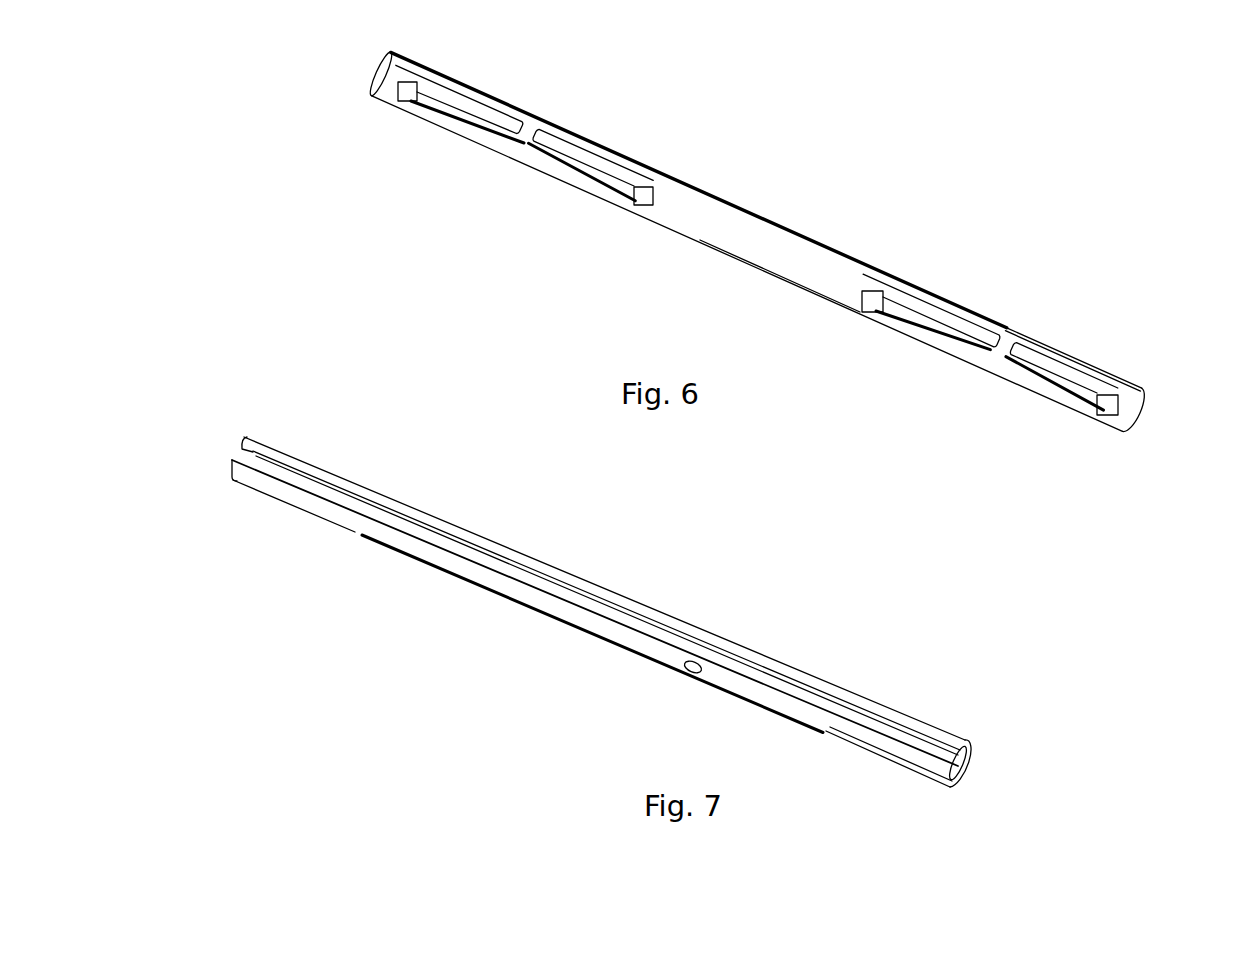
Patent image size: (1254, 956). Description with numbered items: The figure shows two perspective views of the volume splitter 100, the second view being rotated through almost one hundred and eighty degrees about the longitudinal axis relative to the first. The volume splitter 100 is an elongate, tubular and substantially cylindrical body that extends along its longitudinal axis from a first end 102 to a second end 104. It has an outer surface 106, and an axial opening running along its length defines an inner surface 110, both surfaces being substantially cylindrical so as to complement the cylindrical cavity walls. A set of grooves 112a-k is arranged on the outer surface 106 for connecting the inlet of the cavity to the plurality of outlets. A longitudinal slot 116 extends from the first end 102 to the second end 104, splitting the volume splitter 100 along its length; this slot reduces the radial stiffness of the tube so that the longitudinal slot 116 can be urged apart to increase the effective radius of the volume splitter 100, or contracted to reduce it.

In FIG. 6, the volume splitter 100 is at (750, 252).
In FIG. 7, the volume splitter 100 is at (483, 602).
In FIG. 6, the first end 102 is at (372, 93).
In FIG. 7, the first end 102 is at (200, 472).
In FIG. 6, the second end 104 is at (1137, 425).
In FIG. 7, the second end 104 is at (963, 788).
In FIG. 6, the outer surface 106 is at (817, 272).
In FIG. 7, the outer surface 106 is at (700, 628).
In FIG. 7, the inner surface 110 is at (985, 754).
In FIG. 6, the grooves 112a-k is at (532, 168).
In FIG. 6, the longitudinal slot 116 is at (367, 63).
In FIG. 7, the longitudinal slot 116 is at (454, 529).